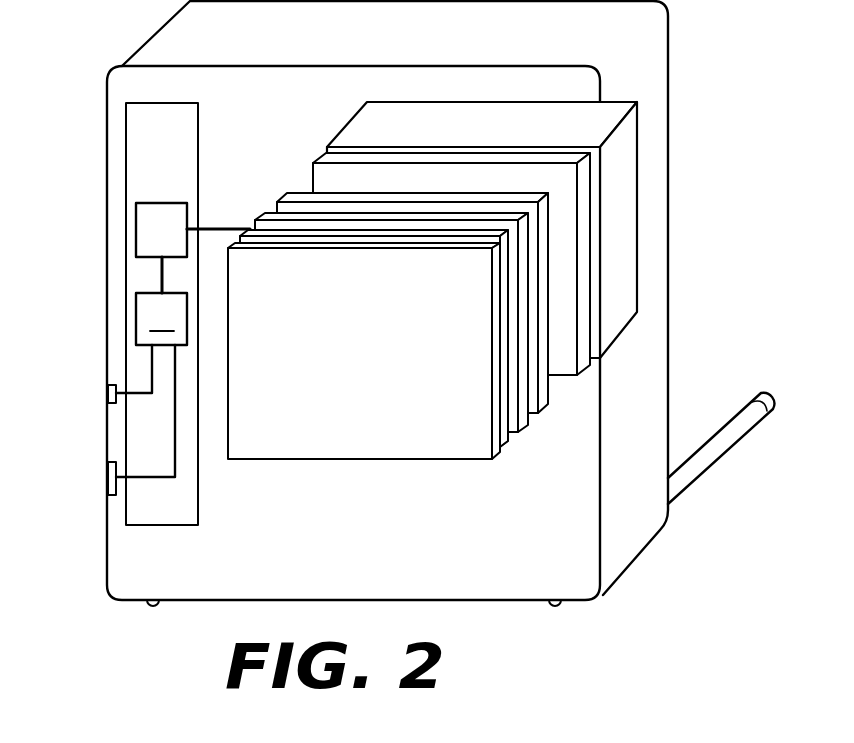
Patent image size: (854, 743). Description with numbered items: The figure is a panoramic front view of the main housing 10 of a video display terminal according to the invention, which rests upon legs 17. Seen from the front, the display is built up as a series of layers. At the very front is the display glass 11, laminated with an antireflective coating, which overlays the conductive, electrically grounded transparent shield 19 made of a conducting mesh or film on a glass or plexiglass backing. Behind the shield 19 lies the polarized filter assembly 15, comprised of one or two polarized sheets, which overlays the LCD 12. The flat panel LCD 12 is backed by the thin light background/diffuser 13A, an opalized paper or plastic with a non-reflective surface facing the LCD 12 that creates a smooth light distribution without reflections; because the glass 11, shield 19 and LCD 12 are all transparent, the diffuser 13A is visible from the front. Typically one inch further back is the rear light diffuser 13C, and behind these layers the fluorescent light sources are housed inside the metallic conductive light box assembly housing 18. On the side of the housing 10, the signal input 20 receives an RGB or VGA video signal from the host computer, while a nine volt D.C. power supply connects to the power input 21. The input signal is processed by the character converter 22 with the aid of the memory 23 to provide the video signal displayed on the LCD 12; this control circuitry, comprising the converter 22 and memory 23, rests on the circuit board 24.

The main housing 10 is at (668, 213).
The display glass 11 is at (228, 253).
The LCD 12 is at (255, 216).
The light background/diffuser 13A is at (277, 193).
The rear light diffuser 13C is at (313, 160).
The polarized filter assembly 15 is at (508, 448).
The legs 17 is at (748, 400).
The light box assembly housing 18 is at (367, 100).
The transparent shield 19 is at (238, 228).
The signal input 20 is at (108, 471).
The power input 21 is at (108, 391).
The character converter 22 is at (161, 301).
The memory 23 is at (136, 226).
The circuit board 24 is at (126, 183).